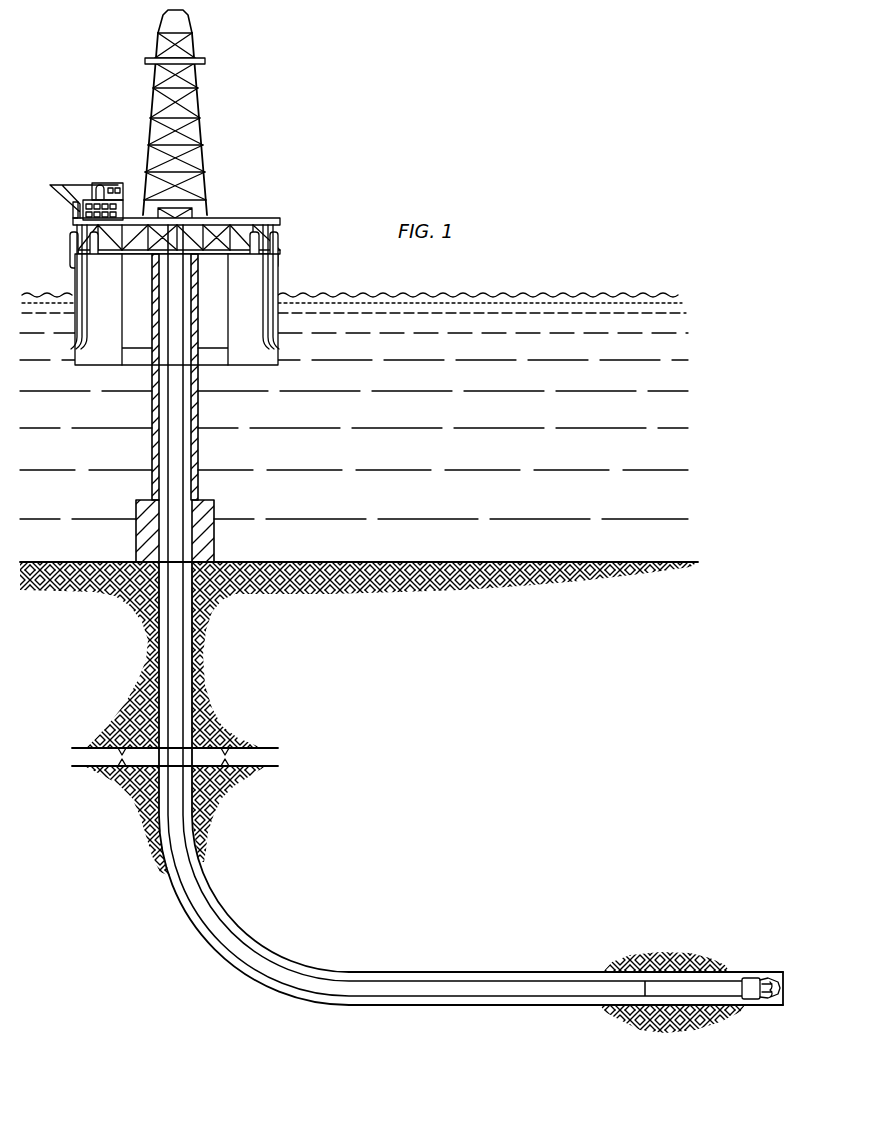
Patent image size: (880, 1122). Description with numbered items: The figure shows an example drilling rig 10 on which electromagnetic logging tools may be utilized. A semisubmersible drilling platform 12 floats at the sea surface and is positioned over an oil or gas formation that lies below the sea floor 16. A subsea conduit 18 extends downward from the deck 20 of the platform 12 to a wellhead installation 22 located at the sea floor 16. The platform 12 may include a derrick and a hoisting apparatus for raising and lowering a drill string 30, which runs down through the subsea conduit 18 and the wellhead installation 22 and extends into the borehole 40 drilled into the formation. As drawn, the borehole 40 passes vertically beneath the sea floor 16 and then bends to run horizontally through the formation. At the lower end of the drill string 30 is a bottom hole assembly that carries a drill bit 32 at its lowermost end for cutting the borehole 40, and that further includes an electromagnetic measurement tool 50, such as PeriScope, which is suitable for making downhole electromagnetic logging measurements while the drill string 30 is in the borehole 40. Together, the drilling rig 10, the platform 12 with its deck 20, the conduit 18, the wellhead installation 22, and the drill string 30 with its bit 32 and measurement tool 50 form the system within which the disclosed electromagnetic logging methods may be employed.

The drilling rig 10 is at (278, 117).
The semisubmersible drilling platform 12 is at (265, 218).
The deck 20 is at (280, 250).
The subsea conduit 18 is at (198, 448).
The wellhead installation 22 is at (205, 499).
The sea floor 16 is at (410, 562).
The drill string 30 is at (175, 380).
The borehole 40 is at (160, 656).
The electromagnetic measurement tool 50 is at (540, 988).
The drill bit 32 is at (757, 977).